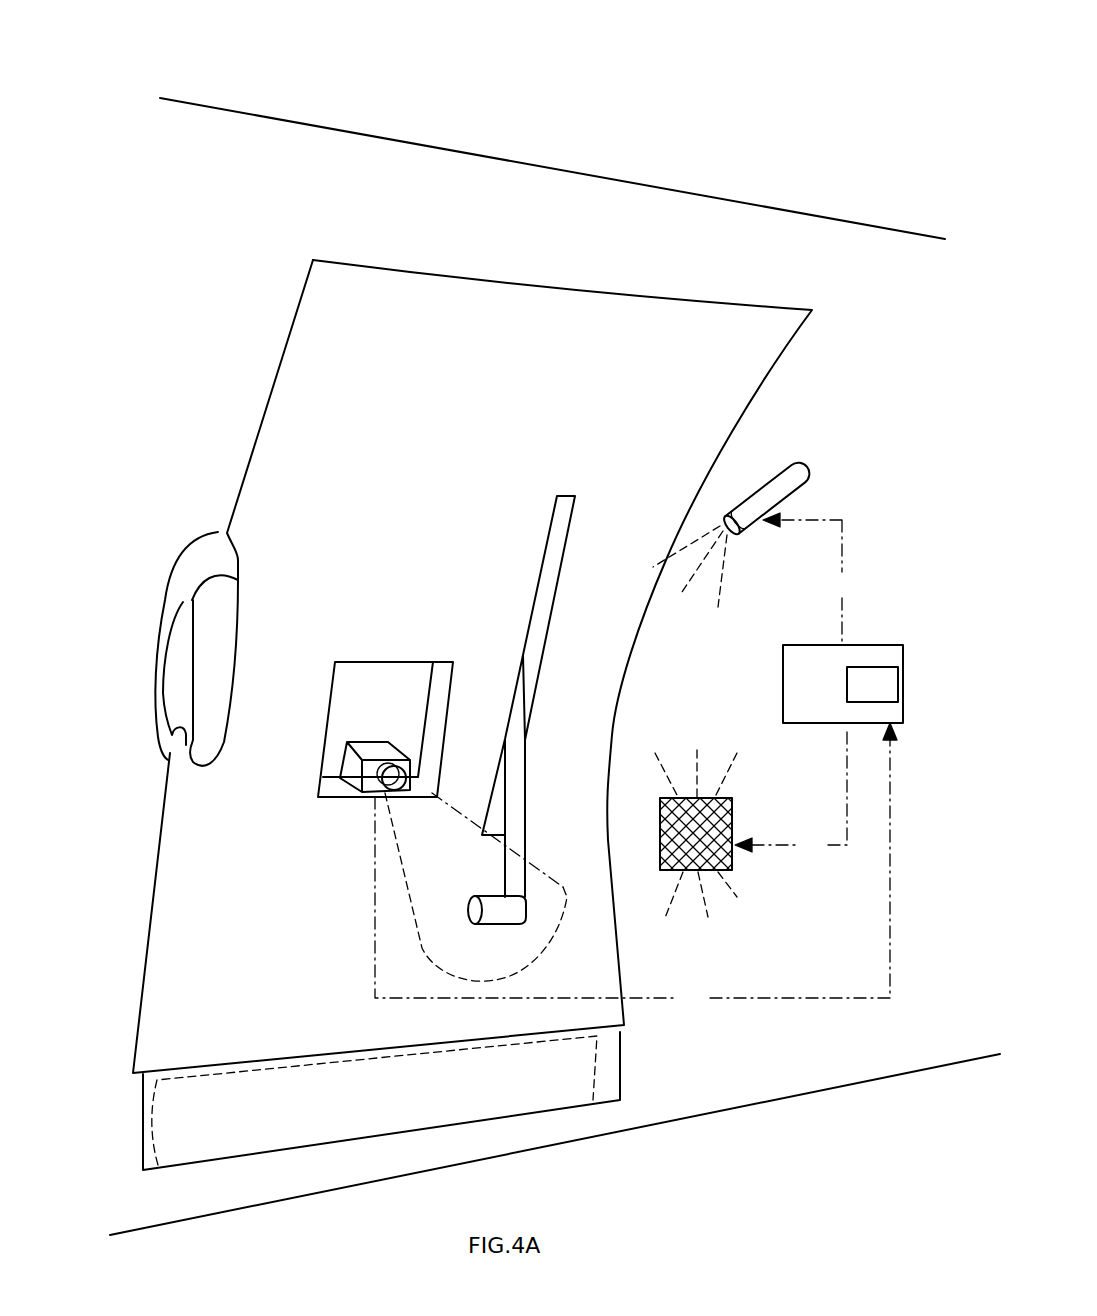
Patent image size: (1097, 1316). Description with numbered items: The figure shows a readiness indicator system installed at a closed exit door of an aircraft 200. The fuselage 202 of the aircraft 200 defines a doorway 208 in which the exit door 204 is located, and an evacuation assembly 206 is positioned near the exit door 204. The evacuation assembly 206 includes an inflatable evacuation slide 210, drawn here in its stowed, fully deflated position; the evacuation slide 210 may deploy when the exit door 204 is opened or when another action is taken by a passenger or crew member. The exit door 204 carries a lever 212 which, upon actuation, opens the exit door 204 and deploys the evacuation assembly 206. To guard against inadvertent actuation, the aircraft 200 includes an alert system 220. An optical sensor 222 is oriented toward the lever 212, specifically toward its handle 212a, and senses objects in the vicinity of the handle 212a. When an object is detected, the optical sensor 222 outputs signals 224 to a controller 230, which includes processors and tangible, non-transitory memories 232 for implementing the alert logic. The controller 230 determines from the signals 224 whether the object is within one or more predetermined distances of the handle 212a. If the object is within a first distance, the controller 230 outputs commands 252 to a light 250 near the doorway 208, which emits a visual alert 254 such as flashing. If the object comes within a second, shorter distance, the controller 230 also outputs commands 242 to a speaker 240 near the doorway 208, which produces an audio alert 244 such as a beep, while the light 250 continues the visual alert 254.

The aircraft 200 is at (354, 75).
The fuselage 202 is at (670, 207).
The exit door 204 is at (418, 557).
The evacuation assembly 206 is at (140, 1122).
The doorway 208 is at (497, 666).
The evacuation slide 210 is at (603, 1070).
The lever 212 is at (510, 797).
The handle 212a is at (488, 898).
The alert system 220 is at (885, 578).
The optical sensor 222 is at (355, 768).
The signals 224 is at (636, 866).
The controller 230 is at (788, 670).
The tangible, non-transitory memories 232 is at (890, 685).
The speaker 240 is at (733, 818).
The commands 242 is at (791, 792).
The audio alert 244 is at (737, 895).
The light 250 is at (792, 487).
The commands 252 is at (811, 579).
The visual alert 254 is at (718, 603).